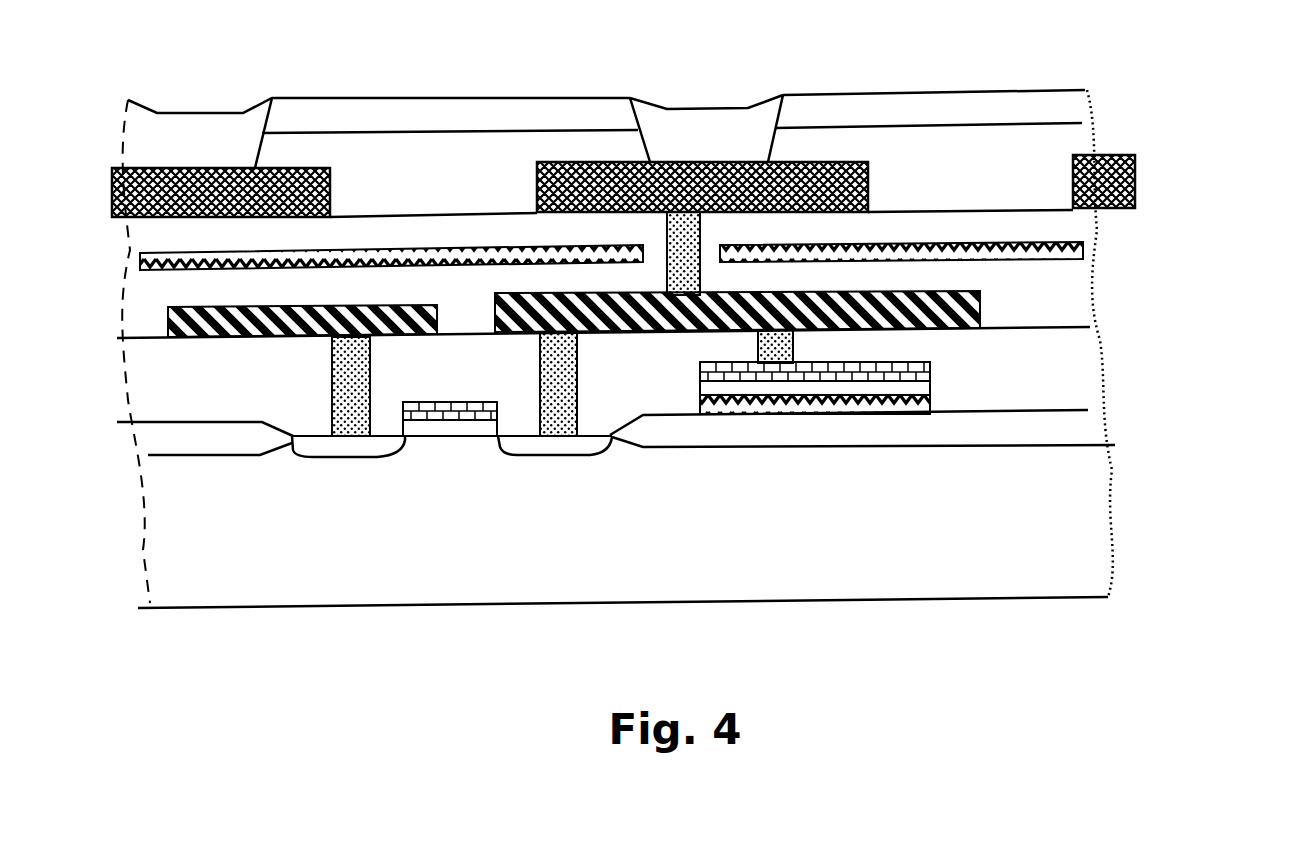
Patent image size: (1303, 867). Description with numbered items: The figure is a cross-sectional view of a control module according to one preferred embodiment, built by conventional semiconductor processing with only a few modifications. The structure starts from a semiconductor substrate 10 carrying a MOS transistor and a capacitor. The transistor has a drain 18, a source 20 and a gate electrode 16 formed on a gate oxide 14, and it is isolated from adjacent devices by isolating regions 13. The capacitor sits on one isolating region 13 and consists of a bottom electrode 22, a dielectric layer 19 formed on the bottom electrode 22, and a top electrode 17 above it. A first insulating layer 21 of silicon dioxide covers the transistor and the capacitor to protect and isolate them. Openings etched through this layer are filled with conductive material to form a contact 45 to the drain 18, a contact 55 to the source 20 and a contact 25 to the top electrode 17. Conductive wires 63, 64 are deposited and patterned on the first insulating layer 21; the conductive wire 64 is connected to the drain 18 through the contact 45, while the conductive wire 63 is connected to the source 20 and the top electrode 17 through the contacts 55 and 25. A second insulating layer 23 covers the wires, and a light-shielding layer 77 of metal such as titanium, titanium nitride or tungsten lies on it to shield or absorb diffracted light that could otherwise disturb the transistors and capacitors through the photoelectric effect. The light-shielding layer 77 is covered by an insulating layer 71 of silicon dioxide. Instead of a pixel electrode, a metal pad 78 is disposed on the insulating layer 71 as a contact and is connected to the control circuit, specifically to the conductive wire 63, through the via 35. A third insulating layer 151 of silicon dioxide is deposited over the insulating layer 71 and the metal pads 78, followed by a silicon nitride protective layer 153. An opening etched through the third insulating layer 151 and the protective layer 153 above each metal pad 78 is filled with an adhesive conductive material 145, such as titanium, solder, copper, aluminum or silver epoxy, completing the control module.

The semiconductor substrate 10 is at (1050, 553).
The isolating region 13 is at (1083, 432).
The gate oxide 14 is at (443, 430).
The gate electrode 16 is at (468, 402).
The top electrode 17 is at (930, 362).
The drain 18 is at (348, 454).
The dielectric layer 19 is at (913, 388).
The source 20 is at (547, 457).
The first insulating layer 21 is at (1070, 343).
The bottom electrode 22 is at (847, 413).
The second insulating layer 23 is at (1077, 303).
The contact 25 is at (793, 347).
The via 35 is at (665, 233).
The contact 45 is at (348, 387).
The contact 55 is at (558, 381).
The conductive wire 63 is at (927, 297).
The conductive wire 64 is at (167, 313).
The third insulating layer 71 is at (1052, 228).
The light-shielding layer 77 is at (1083, 249).
The metal pad 78 is at (810, 163).
The adhesive conductive material 145 is at (757, 130).
The third insulating layer 151 is at (1013, 162).
The protective layer 153 is at (1007, 108).